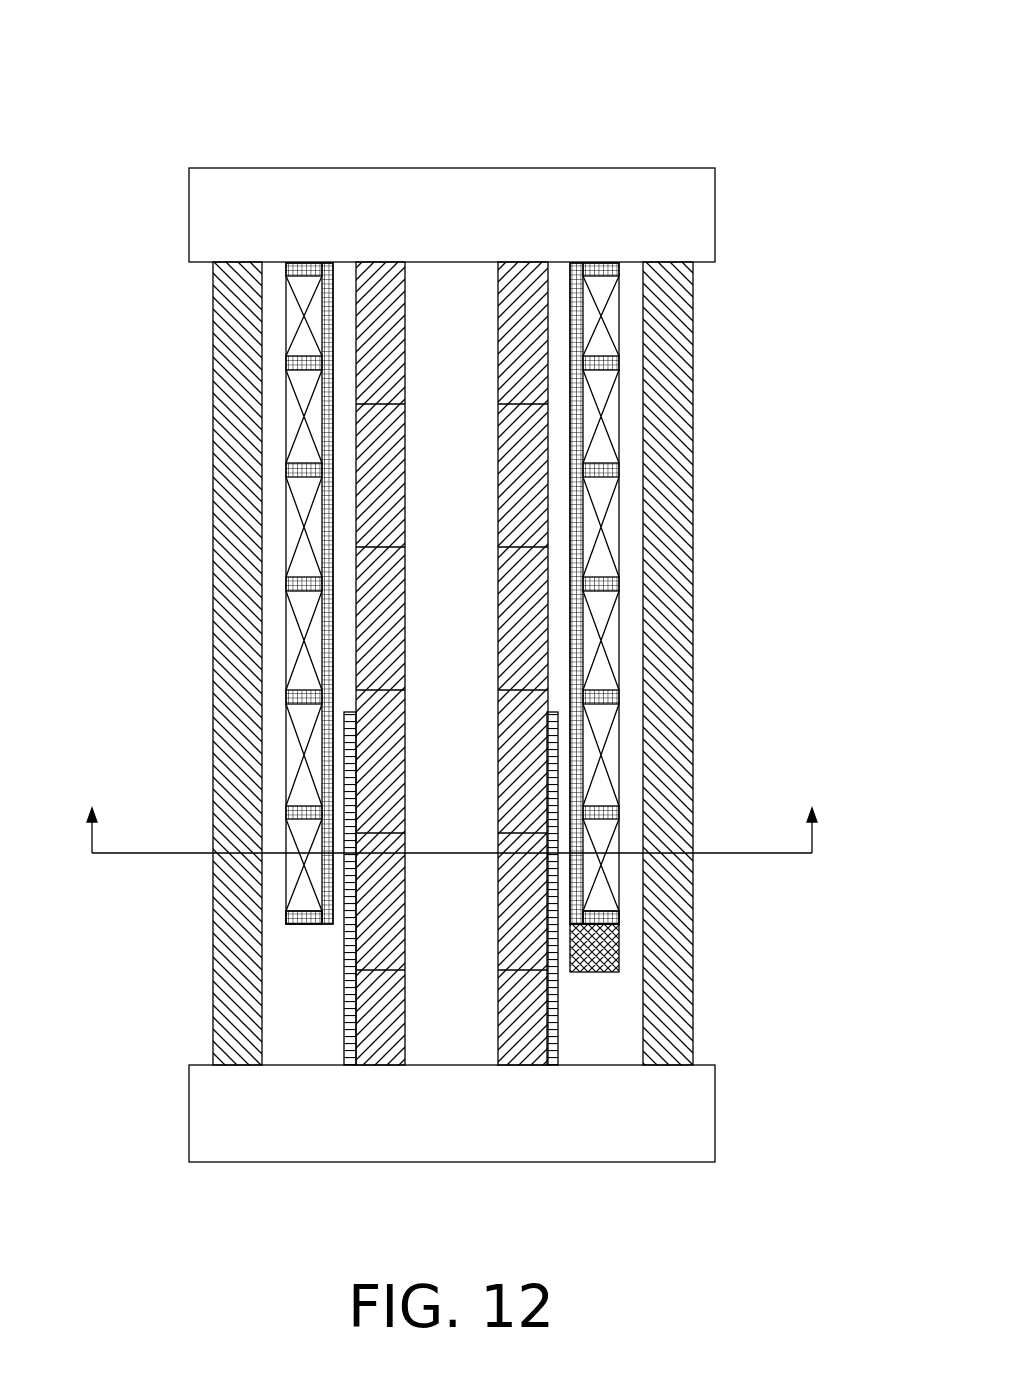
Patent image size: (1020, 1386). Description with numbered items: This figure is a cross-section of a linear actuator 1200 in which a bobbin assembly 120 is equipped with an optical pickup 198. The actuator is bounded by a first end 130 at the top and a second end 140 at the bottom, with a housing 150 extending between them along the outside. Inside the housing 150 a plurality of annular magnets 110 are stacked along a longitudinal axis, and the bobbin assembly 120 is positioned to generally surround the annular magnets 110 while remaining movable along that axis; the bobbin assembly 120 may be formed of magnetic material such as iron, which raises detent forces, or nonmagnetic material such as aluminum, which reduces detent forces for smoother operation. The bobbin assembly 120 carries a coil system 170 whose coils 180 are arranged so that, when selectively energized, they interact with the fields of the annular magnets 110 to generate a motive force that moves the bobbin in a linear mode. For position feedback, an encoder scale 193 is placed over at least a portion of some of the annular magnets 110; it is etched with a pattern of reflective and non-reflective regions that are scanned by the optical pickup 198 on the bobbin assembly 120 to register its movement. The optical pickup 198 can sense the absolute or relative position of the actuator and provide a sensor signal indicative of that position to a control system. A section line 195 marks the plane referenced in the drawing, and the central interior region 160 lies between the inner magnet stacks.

The linear actuator 1200 is at (722, 47).
The first end 130 is at (715, 212).
The second end 140 is at (717, 1113).
The housing 150 is at (213, 400).
The annular magnets 110 is at (357, 683).
The coils 180 is at (288, 535).
The coil system 170 is at (262, 327).
The bobbin assembly 120 is at (288, 916).
The optical pickup 198 is at (613, 960).
The encoder scale 193 is at (344, 980).
The section line 195 is at (451, 807).
The chamber 160 is at (477, 1030).